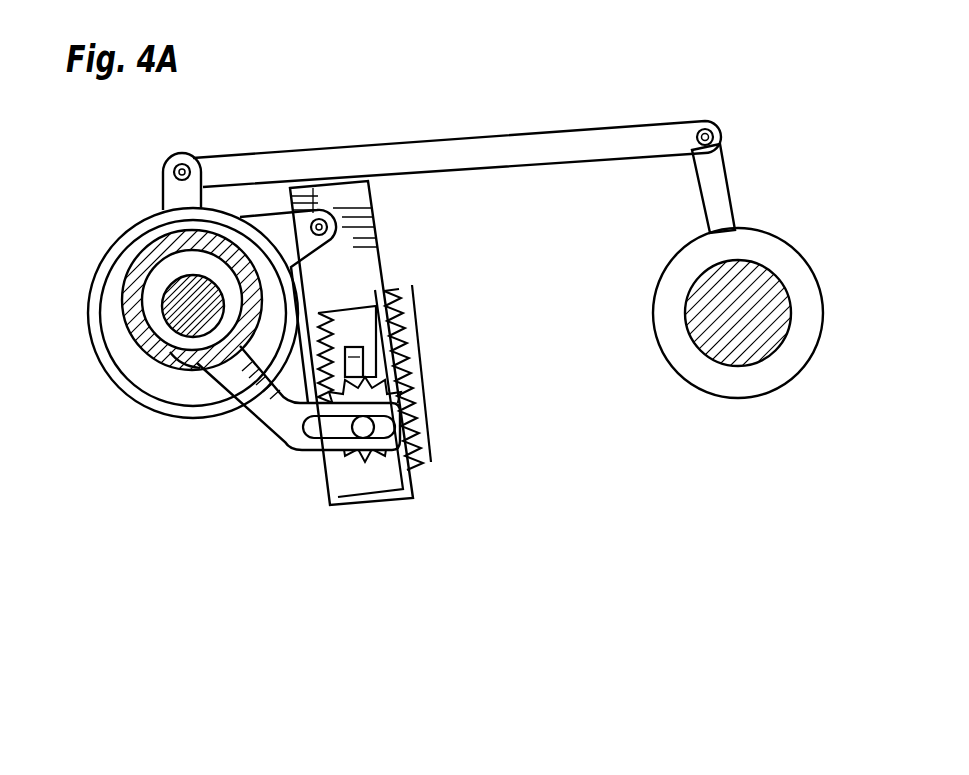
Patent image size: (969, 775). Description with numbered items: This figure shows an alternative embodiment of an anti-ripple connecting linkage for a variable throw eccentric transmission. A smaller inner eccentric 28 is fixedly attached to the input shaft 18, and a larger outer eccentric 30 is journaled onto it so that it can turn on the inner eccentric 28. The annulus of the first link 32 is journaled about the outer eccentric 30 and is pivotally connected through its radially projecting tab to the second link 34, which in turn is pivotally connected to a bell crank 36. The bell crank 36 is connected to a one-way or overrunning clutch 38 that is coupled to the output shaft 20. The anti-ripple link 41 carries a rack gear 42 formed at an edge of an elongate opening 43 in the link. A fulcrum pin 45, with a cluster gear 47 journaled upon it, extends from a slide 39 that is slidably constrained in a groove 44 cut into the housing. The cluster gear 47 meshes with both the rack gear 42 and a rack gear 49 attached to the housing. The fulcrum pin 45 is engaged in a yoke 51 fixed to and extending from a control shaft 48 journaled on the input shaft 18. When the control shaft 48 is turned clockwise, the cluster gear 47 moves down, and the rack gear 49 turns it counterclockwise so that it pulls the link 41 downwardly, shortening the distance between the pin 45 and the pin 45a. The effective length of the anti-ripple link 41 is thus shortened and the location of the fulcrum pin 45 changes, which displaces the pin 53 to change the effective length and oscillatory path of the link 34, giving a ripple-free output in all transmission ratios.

The input shaft 18 is at (173, 311).
The output shaft 20 is at (747, 328).
The inner eccentric 28 is at (143, 260).
The outer eccentric 30 is at (107, 291).
The first link 32 is at (130, 220).
The second link 34 is at (455, 148).
The bell crank 36 is at (717, 187).
The one-way clutch 38 is at (790, 262).
The slide 39 is at (372, 380).
The anti-ripple link 41 is at (377, 243).
The rack gear 42 is at (340, 308).
The elongate opening 43 is at (413, 312).
The groove 44 is at (420, 336).
The fulcrum pin 45 is at (340, 442).
The pin 45a is at (316, 214).
The cluster gear 47 is at (358, 468).
The control shaft 48 is at (175, 362).
The rack gear 49 is at (432, 456).
The yoke 51 is at (256, 418).
The pin 53 is at (175, 158).